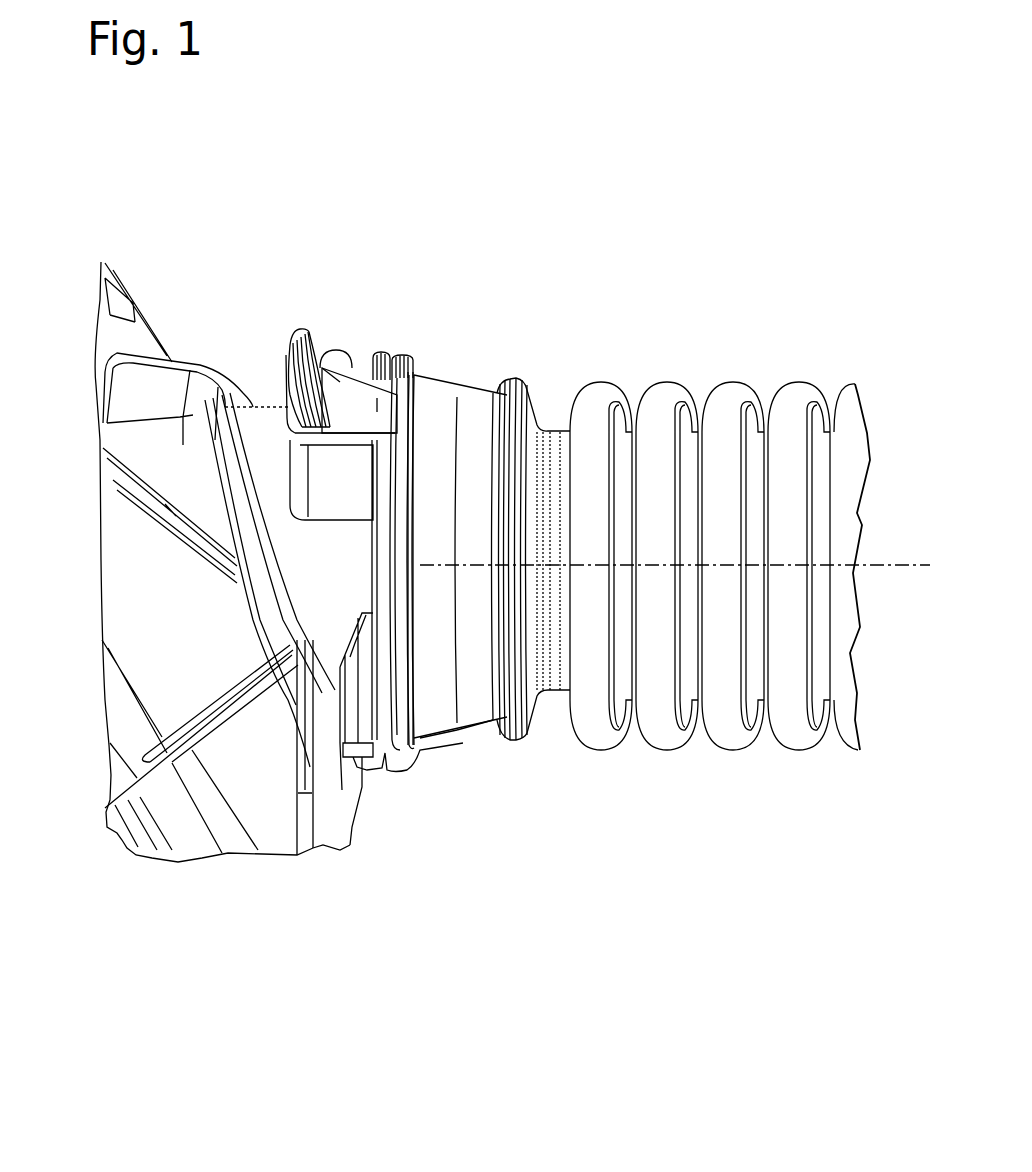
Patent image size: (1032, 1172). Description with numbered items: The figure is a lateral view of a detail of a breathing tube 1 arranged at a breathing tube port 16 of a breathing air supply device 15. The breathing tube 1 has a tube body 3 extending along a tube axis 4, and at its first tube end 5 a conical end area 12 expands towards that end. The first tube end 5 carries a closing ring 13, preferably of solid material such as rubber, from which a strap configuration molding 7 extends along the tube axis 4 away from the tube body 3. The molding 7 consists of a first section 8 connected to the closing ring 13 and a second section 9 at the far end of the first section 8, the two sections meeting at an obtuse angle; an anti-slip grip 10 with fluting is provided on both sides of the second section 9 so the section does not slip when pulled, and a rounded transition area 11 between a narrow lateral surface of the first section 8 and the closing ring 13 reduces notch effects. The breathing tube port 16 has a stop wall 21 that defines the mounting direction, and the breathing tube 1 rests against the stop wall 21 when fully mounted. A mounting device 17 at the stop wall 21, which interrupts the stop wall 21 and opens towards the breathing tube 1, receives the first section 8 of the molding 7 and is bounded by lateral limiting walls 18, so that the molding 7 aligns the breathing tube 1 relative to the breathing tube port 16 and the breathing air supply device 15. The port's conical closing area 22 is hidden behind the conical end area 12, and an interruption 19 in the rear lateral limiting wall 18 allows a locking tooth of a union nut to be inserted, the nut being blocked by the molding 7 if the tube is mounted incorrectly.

The breathing tube 1 is at (680, 316).
The tube body 3 is at (695, 437).
The tube axis 4 is at (905, 567).
The first tube end 5 is at (420, 778).
The strap configuration molding 7 is at (347, 378).
The first section 8 is at (385, 360).
The second section 9 is at (293, 330).
The anti-slip grip 10 is at (310, 330).
The transition area 11 is at (405, 378).
The conical end area 12 is at (474, 778).
The closing ring 13 is at (400, 772).
The breathing air supply device 15 is at (157, 270).
The breathing tube port 16 is at (342, 600).
The mounting device 17 is at (280, 422).
The lateral limiting walls 18 is at (340, 473).
The interruption 19 is at (373, 353).
The stop wall 21 is at (383, 552).
The conical closing area 22 is at (450, 776).